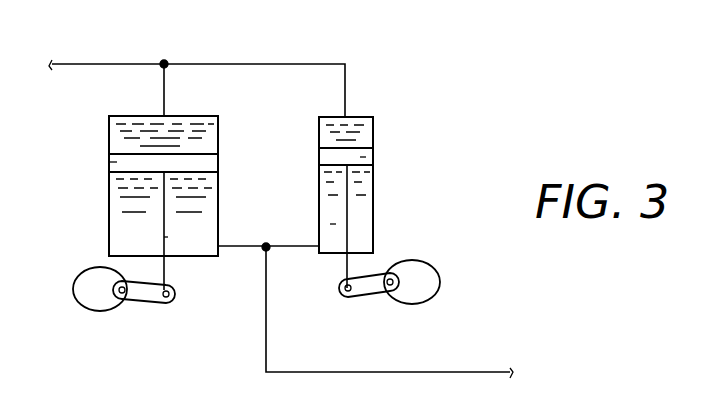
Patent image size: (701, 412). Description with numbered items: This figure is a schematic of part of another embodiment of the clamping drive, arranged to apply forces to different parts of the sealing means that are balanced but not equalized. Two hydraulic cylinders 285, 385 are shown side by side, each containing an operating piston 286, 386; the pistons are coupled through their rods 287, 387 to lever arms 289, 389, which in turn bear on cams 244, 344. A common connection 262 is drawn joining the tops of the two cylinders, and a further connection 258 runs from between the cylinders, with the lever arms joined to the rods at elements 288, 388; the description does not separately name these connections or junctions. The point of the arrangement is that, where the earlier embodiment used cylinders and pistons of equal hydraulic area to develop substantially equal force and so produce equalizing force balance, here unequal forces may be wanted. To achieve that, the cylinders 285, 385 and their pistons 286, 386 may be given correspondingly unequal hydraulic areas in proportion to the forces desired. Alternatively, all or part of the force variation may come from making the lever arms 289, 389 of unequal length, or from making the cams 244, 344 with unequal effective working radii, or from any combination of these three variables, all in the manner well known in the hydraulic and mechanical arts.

The supply line 262 is at (236, 62).
The hydraulic cylinder 285 is at (112, 117).
The piston 286 is at (109, 162).
The rod / drain line 287 is at (164, 237).
The hydraulic cylinder 385 is at (319, 122).
The piston 386 is at (362, 157).
The compartment 387 is at (336, 224).
The output line 258 is at (316, 371).
The cam 244 is at (90, 277).
The pivot 288 is at (166, 303).
The lever arm 289 is at (138, 302).
The cam 344 is at (430, 280).
The lever arm 389 is at (376, 280).
The pivot 388 is at (350, 296).